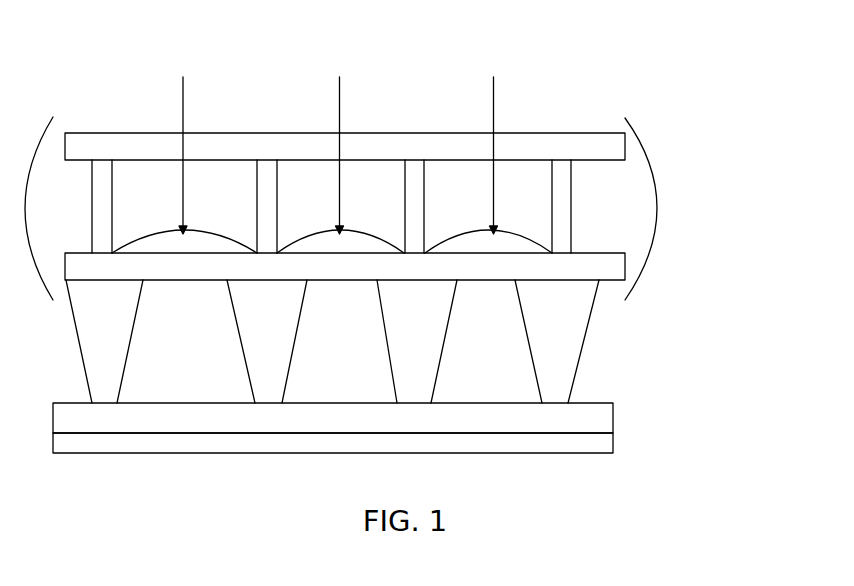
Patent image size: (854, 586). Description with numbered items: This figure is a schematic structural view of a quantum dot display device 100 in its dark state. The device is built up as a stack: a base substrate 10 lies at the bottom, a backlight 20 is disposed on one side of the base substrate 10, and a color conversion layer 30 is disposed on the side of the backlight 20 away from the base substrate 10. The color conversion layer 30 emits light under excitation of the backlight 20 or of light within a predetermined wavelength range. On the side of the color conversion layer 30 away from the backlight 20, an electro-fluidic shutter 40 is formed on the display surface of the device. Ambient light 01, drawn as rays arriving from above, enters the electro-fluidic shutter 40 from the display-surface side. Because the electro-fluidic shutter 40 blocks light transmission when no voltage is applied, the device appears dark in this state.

The quantum dot display device 100 is at (397, 243).
The ambient light 01 is at (338, 118).
The electro-fluidic shutter 40 is at (652, 214).
The color conversion layer 30 is at (615, 345).
The backlight 20 is at (613, 421).
The base substrate 10 is at (613, 437).